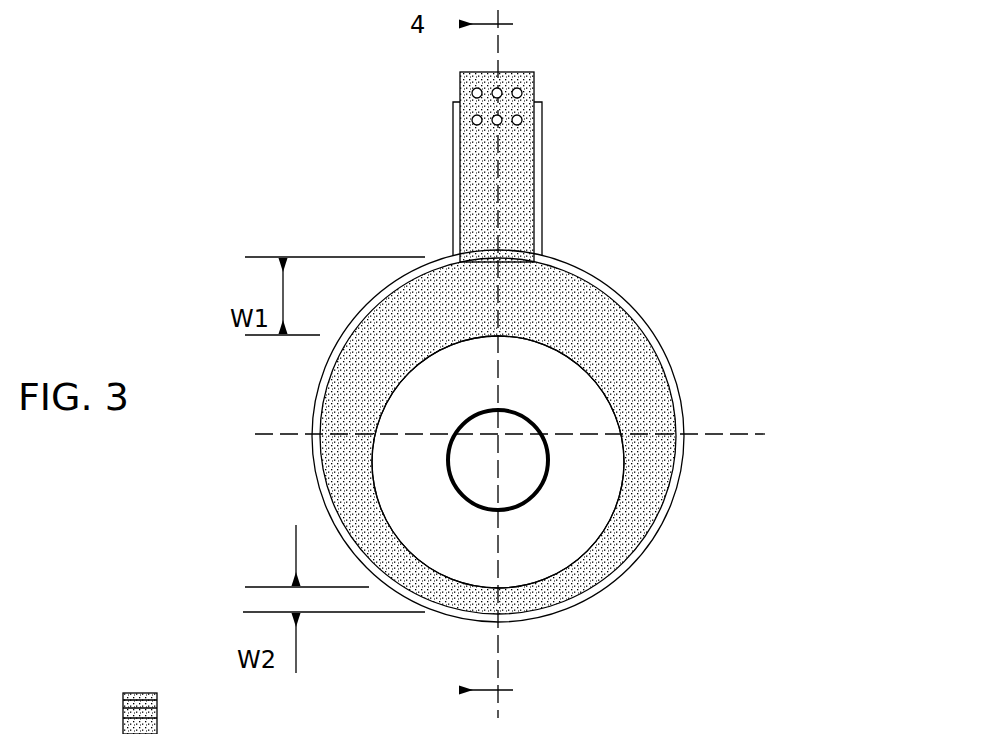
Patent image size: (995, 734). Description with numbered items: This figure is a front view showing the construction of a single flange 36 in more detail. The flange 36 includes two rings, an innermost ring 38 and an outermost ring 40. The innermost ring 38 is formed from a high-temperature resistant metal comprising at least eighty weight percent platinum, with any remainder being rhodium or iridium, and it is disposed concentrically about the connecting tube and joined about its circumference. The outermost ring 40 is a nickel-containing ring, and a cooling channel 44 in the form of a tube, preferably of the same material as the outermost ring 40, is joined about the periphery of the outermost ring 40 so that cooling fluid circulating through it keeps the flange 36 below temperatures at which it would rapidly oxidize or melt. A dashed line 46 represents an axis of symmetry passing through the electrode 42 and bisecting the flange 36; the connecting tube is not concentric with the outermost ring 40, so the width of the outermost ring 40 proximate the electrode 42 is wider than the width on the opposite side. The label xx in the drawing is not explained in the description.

The flange 36 is at (363, 192).
The innermost ring 38 is at (583, 542).
The outermost ring 40 is at (617, 328).
The electrode 42 is at (534, 87).
The cooling channel 44 is at (570, 257).
The axis of symmetry 46 is at (502, 51).
The section axis xx is at (500, 637).